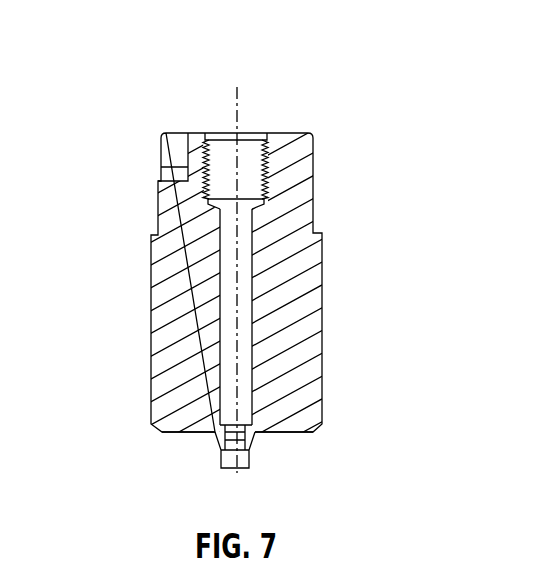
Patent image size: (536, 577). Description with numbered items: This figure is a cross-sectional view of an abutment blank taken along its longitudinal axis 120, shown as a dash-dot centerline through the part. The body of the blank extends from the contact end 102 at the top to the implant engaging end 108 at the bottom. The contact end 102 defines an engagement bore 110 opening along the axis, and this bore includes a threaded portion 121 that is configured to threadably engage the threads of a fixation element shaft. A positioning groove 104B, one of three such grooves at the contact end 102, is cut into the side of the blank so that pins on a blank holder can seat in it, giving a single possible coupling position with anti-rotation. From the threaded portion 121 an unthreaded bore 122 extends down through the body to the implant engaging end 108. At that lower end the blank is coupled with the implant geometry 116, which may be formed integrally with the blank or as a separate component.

The contact end 102 is at (284, 132).
The positioning groove 104B is at (172, 153).
The implant engaging end 108 is at (173, 432).
The engagement bore 110 is at (222, 150).
The implant geometry 116 is at (250, 452).
The longitudinal axis 120 is at (238, 90).
The threaded portion 121 is at (253, 178).
The unthreaded bore 122 is at (230, 280).